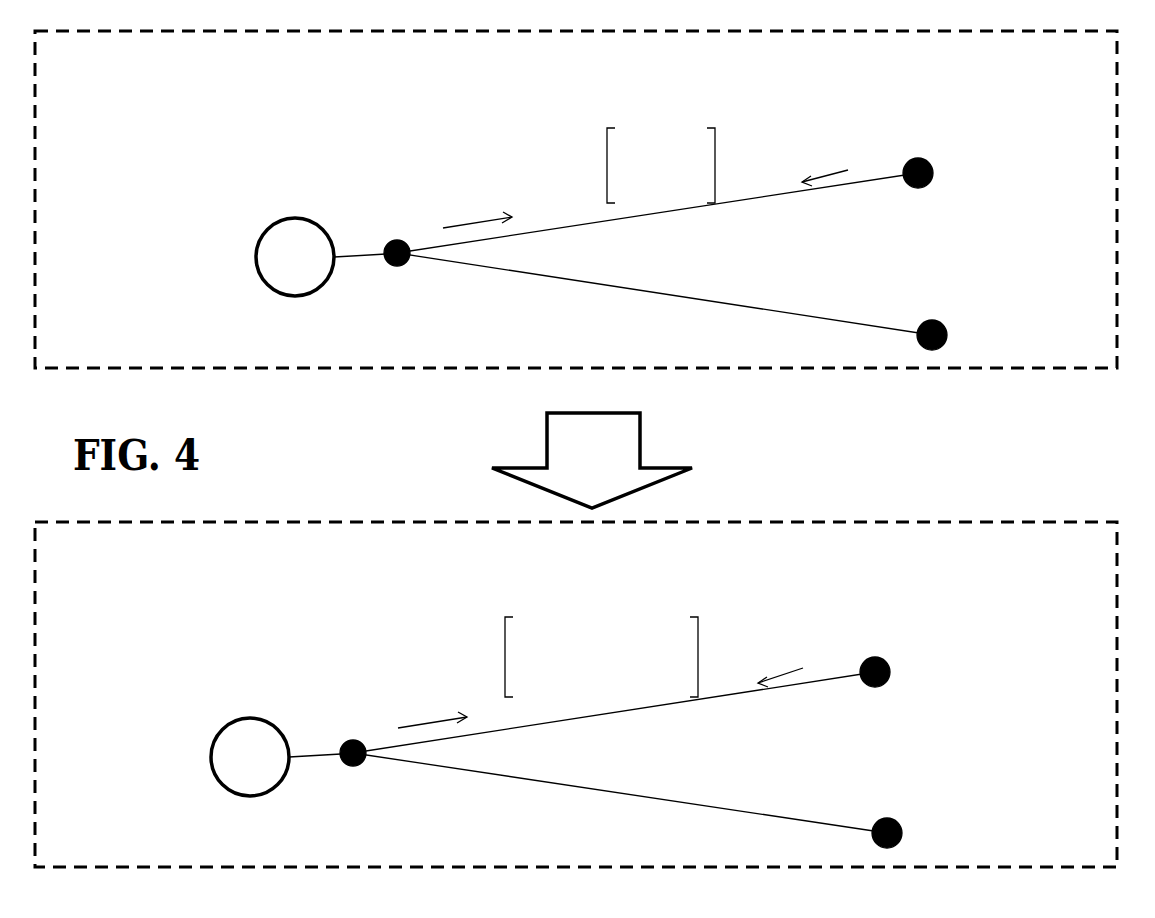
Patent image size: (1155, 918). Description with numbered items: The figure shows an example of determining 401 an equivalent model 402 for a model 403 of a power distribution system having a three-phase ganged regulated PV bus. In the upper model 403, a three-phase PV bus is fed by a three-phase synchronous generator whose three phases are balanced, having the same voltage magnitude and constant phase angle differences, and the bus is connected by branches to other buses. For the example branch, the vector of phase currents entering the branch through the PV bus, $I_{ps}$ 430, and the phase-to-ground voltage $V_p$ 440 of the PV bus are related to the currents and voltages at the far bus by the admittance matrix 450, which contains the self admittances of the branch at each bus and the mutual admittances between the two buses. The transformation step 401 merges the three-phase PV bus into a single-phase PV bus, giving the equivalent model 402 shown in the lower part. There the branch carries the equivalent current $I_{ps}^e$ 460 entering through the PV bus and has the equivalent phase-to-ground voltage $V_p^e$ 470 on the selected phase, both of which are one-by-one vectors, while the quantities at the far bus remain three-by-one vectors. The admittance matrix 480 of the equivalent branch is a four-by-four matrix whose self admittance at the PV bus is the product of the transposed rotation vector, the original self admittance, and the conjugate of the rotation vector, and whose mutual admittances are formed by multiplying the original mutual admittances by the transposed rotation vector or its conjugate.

The determining an equivalent model 401 is at (613, 464).
The equivalent model 402 is at (1003, 867).
The model of the power distribution system 403 is at (1007, 368).
The phase current vector I_ps 430 is at (492, 187).
The phase to ground voltage V_p 440 is at (383, 313).
The admittance matrix of the branch 450 is at (687, 130).
The equivalent current I_ps^e 460 is at (440, 703).
The equivalent phase to ground voltage V_p^e 470 is at (383, 795).
The admittance matrix of the equivalent branch 480 is at (612, 612).